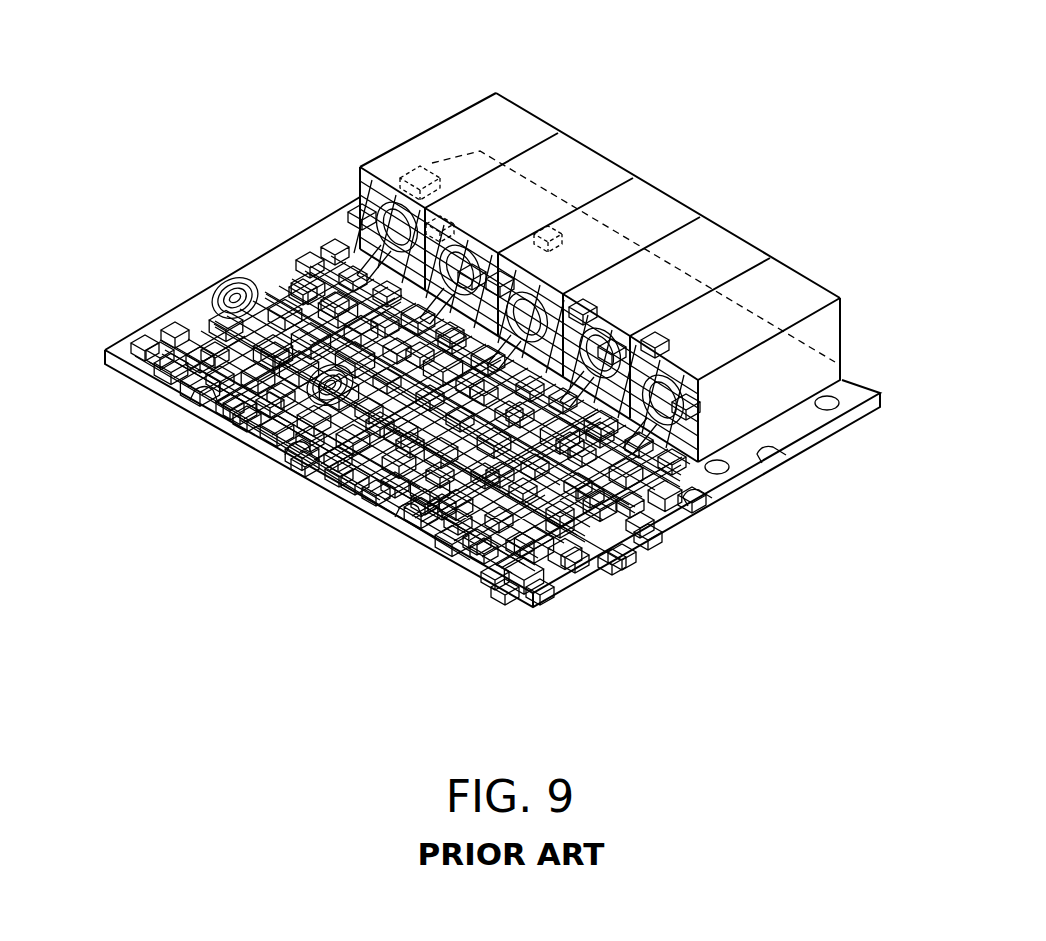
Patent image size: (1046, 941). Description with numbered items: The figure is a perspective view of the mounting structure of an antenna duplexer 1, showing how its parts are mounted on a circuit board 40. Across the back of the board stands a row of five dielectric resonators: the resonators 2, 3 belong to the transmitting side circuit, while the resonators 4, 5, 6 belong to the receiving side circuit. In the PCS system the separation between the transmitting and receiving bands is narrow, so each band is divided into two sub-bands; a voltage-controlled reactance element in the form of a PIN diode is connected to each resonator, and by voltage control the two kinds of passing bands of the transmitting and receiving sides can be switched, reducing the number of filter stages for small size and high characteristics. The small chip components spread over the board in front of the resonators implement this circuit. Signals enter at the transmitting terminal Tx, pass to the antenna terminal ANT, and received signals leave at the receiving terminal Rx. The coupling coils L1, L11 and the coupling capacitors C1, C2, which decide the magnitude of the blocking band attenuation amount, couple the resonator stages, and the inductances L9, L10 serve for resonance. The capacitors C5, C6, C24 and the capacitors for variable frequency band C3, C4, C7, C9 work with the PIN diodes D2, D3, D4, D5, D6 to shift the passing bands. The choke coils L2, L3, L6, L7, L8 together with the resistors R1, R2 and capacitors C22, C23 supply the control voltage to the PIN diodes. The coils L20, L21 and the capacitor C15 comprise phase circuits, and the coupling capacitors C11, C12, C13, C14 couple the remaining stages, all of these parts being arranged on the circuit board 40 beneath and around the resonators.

The antenna duplexer 1 is at (52, 196).
The resonator 2 is at (510, 128).
The resonator 3 is at (587, 163).
The resonator 4 is at (650, 213).
The resonator 5 is at (720, 250).
The resonator 6 is at (790, 292).
The circuit board 40 is at (820, 435).
The transmitting terminal Tx is at (360, 205).
The receiving terminal Rx is at (620, 557).
The antenna terminal ANT is at (300, 462).
The coupling capacitor C1 is at (330, 240).
The coupling capacitor C2 is at (500, 272).
The capacitor for variable frequency band C3 is at (300, 280).
The capacitor for variable frequency band C4 is at (440, 218).
The capacitor C5 is at (548, 228).
The capacitor C6 is at (418, 166).
The capacitor for variable frequency band C7 is at (420, 500).
The capacitor for variable frequency band C9 is at (690, 390).
The coupling capacitor C11 is at (455, 522).
The coupling capacitor C12 is at (613, 340).
The coupling capacitor C13 is at (573, 560).
The coupling capacitor C14 is at (610, 562).
The capacitor comprising phase circuit C15 is at (333, 457).
The capacitor for supplying control voltage C22 is at (130, 362).
The capacitor for supplying control voltage C23 is at (538, 592).
The capacitor C24 is at (242, 418).
The PIN diode D2 is at (470, 265).
The PIN diode D3 is at (307, 253).
The PIN diode D4 is at (585, 300).
The PIN diode D5 is at (492, 575).
The PIN diode D6 is at (658, 333).
The coupling coil L1 is at (222, 282).
The choke coil L2 is at (215, 378).
The choke coil L3 is at (225, 405).
The choke coil L6 is at (390, 483).
The choke coil L7 is at (437, 505).
The choke coil L8 is at (505, 592).
The inductance for resonance L9 is at (550, 314).
The inductance for resonance L10 is at (690, 500).
The coupling coil L11 is at (645, 537).
The coil comprising phase circuit L20 is at (305, 437).
The coil comprising phase circuit L21 is at (350, 480).
The resistor for supplying control voltage R1 is at (170, 322).
The resistor for supplying control voltage R2 is at (472, 540).